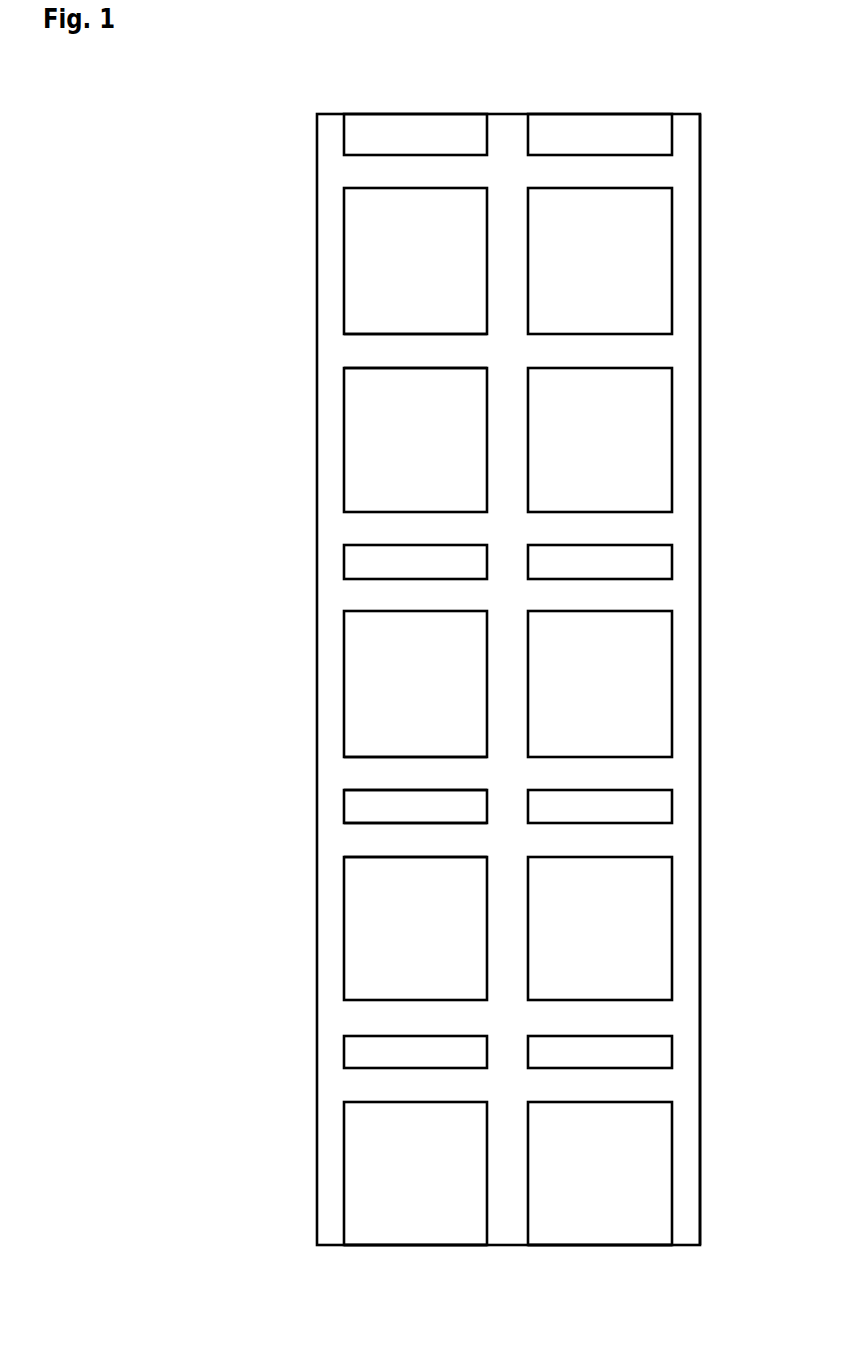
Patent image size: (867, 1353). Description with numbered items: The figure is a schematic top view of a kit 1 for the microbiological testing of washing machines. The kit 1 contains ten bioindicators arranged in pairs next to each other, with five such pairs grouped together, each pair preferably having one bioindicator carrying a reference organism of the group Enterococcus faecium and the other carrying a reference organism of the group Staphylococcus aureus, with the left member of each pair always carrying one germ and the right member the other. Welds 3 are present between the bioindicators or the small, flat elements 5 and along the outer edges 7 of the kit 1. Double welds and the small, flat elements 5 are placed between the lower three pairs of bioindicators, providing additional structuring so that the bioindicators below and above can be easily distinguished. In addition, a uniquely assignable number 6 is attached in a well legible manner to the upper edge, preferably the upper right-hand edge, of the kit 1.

The kit 1 is at (704, 177).
The single weld seam 3 is at (368, 350).
The flat elements 5 is at (368, 563).
The uniquely assignable number 6 is at (662, 132).
The outer edges 7 is at (683, 593).